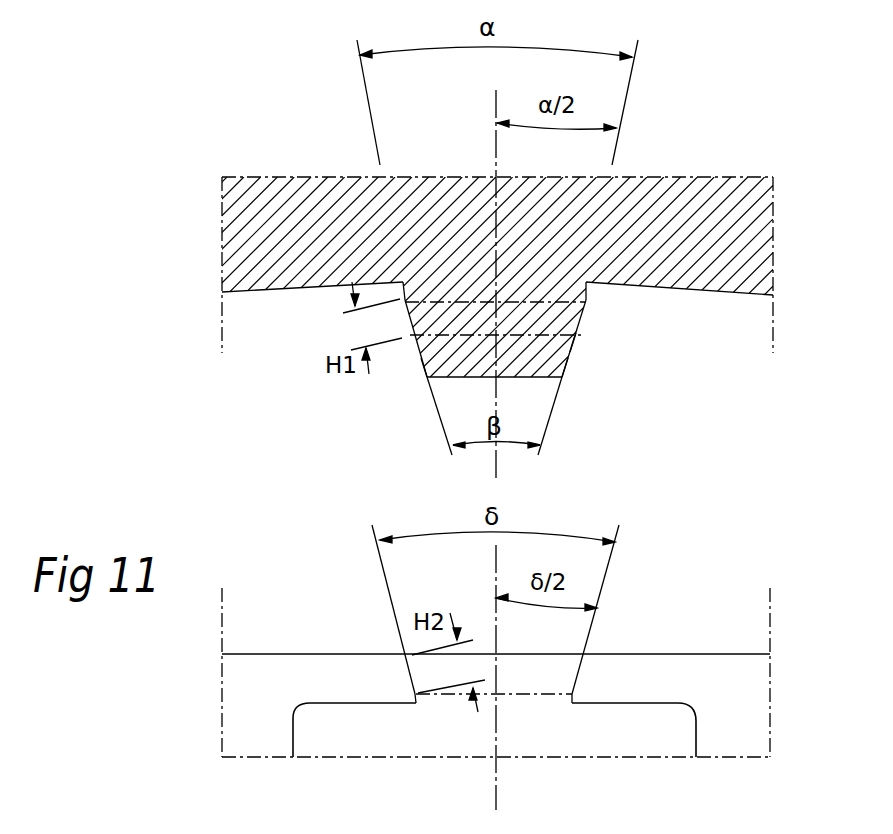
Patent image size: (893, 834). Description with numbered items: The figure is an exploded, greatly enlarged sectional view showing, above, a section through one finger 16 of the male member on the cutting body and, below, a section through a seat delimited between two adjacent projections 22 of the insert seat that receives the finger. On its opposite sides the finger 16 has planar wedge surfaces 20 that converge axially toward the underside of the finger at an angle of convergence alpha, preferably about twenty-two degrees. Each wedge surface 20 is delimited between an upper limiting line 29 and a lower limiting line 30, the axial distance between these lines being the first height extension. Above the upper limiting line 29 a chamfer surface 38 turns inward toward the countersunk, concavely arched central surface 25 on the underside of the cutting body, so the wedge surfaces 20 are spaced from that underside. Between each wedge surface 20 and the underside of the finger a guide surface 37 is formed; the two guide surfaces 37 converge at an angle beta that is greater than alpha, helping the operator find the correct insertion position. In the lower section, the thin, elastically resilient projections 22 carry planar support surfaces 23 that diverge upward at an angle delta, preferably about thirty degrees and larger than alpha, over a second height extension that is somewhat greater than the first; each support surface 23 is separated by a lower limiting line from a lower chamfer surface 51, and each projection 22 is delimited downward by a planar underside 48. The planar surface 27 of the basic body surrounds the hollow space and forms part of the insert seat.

The finger 16 is at (533, 380).
The wedge surface 20 is at (411, 323).
The projection 22 is at (403, 706).
The support surface 23 is at (408, 672).
The central surface 25 is at (320, 291).
The surface of the basic body 27 is at (710, 655).
The upper limiting line 29 is at (585, 300).
The lower limiting line 30 is at (578, 337).
The guide surface 37 is at (423, 363).
The chamfer surface 38 is at (403, 283).
The planar underside 48 is at (358, 705).
The lower chamfer surface 51 is at (417, 696).